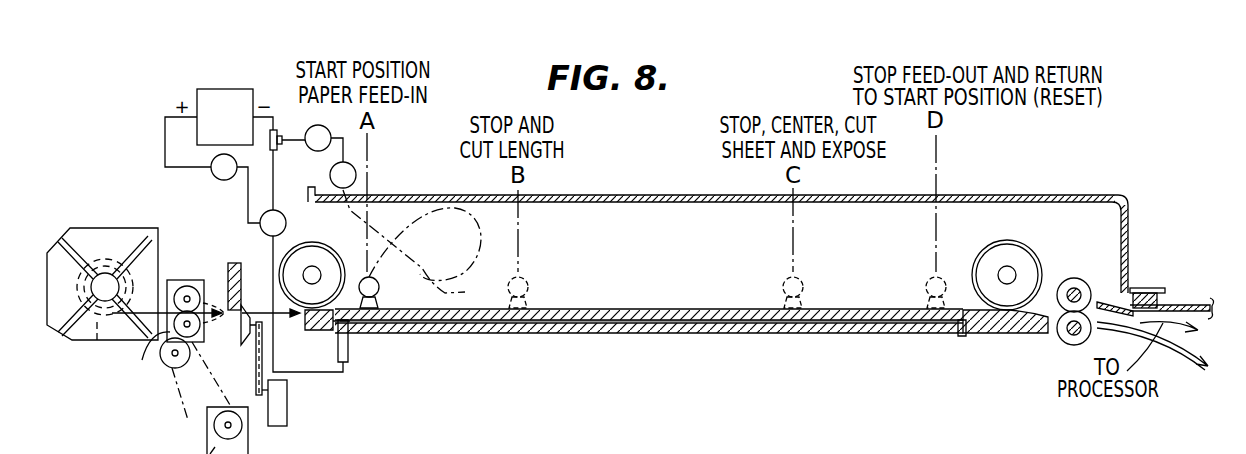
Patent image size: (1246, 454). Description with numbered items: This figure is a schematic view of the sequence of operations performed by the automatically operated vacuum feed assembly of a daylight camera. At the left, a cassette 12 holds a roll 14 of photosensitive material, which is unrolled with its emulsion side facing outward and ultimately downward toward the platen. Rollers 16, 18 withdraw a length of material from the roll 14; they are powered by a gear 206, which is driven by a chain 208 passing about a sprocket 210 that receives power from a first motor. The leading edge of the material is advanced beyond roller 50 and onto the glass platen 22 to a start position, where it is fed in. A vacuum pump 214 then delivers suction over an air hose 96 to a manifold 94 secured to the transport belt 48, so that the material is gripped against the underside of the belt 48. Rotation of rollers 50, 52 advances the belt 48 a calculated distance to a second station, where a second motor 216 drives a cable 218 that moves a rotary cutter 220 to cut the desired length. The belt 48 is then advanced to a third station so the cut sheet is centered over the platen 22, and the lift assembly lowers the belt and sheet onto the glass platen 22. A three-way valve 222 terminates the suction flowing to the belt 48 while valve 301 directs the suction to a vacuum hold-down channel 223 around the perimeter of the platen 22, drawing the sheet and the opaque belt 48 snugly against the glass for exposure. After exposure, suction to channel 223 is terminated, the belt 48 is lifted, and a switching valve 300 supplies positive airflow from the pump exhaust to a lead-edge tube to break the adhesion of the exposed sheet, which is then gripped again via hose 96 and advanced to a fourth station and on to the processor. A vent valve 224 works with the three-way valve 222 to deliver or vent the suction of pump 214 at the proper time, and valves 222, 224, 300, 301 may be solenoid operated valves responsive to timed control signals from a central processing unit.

The cassette 12 is at (110, 228).
The roll 14 is at (97, 345).
The roller 16 is at (188, 288).
The roller 18 is at (146, 352).
The glass platen 22 is at (629, 322).
The transport belt 48 is at (577, 310).
The roller 50 is at (313, 258).
The roller 52 is at (1027, 265).
The manifold 94 is at (528, 280).
The air hose 96 is at (416, 249).
The gear 206 is at (177, 367).
The chain 208 is at (192, 392).
The sprocket 210 is at (237, 430).
The vacuum pump 214 is at (203, 88).
The second motor 216 is at (288, 412).
The cable 218 is at (256, 360).
The rotary cutter 220 is at (243, 302).
The three-way valve 222 is at (323, 150).
The vacuum hold-down channel 223 is at (349, 337).
The vent valve 224 is at (357, 176).
The switching valve 300 is at (216, 178).
The valve 301 is at (260, 226).